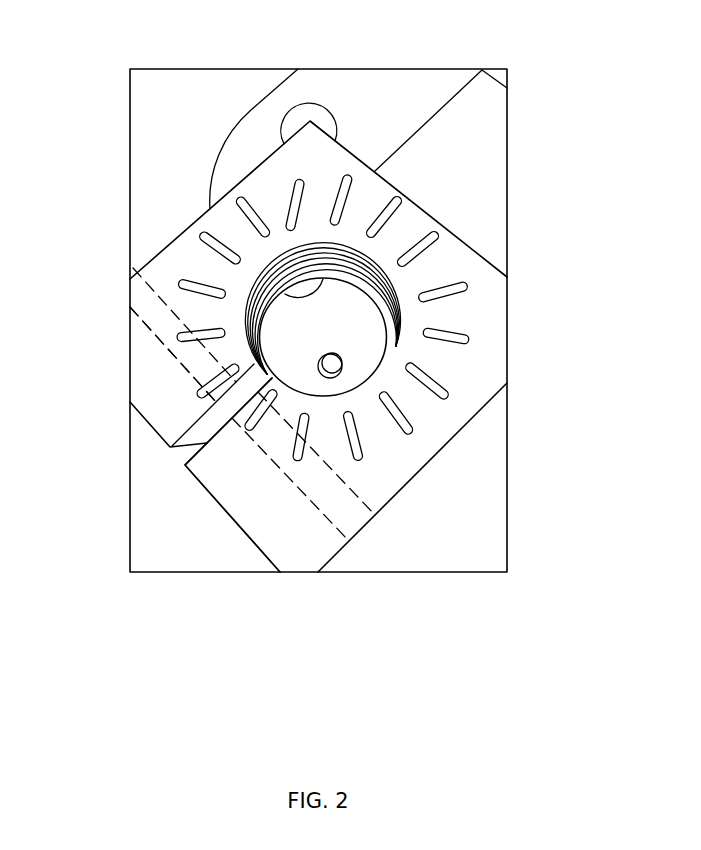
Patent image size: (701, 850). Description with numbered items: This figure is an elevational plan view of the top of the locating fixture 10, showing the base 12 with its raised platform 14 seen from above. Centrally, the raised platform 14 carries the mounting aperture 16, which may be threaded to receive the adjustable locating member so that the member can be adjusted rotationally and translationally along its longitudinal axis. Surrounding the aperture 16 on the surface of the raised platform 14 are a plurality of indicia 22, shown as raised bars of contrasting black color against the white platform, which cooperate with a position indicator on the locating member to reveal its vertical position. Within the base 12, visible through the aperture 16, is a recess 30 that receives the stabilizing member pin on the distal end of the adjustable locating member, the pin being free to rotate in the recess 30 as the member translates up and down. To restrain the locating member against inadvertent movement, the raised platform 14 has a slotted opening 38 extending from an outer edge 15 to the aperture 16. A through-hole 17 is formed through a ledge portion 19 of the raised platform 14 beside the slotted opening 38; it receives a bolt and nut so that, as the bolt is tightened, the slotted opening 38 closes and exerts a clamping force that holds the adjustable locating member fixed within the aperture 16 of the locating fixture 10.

The locating fixture 10 is at (556, 139).
The base 12 is at (361, 134).
The raised platform 14 is at (487, 352).
The outer edge 15 is at (188, 469).
The mounting aperture 16 is at (403, 276).
The through-hole 17 is at (157, 303).
The ledge portion 19 is at (157, 367).
The indicia 22 is at (365, 433).
The recess 30 is at (346, 369).
The slotted opening 38 is at (203, 427).